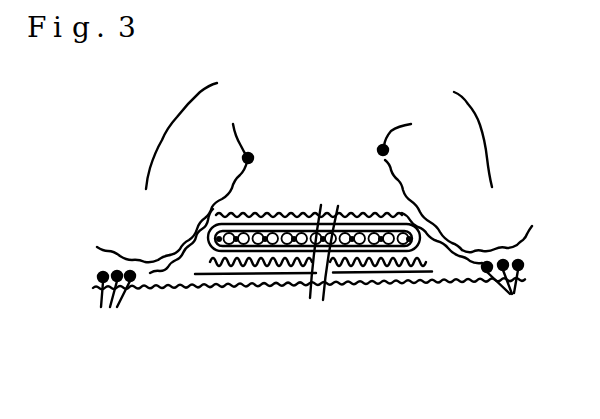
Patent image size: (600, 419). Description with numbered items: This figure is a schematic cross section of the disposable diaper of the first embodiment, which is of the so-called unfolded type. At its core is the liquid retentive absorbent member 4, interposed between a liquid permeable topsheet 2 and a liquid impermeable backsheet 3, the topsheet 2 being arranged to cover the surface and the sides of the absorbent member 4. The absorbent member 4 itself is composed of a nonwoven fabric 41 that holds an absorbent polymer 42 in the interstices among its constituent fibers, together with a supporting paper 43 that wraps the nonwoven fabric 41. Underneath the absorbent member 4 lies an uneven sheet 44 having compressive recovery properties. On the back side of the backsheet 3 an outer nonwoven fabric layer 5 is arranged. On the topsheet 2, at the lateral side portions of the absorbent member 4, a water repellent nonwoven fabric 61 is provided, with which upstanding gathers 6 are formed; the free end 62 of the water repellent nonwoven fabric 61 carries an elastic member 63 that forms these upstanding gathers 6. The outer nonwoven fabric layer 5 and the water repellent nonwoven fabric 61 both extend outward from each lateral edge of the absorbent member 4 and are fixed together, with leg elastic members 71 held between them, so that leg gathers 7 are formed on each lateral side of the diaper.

The liquid permeable topsheet 2 is at (300, 213).
The liquid impermeable backsheet 3 is at (215, 275).
The liquid retentive absorbent member 4 is at (320, 314).
The nonwoven fabric 41 is at (262, 268).
The absorbent polymer 42 is at (295, 285).
The supporting paper 43 is at (349, 268).
The uneven sheet 44 is at (378, 304).
The outer nonwoven fabric layer 5 is at (140, 289).
The upstanding gathers 6 is at (324, 136).
The water repellent nonwoven fabric 61 is at (213, 201).
The free end 62 is at (326, 123).
The elastic member 63 is at (243, 157).
The leg gathers 7 is at (98, 245).
The leg elastic members 71 is at (310, 303).